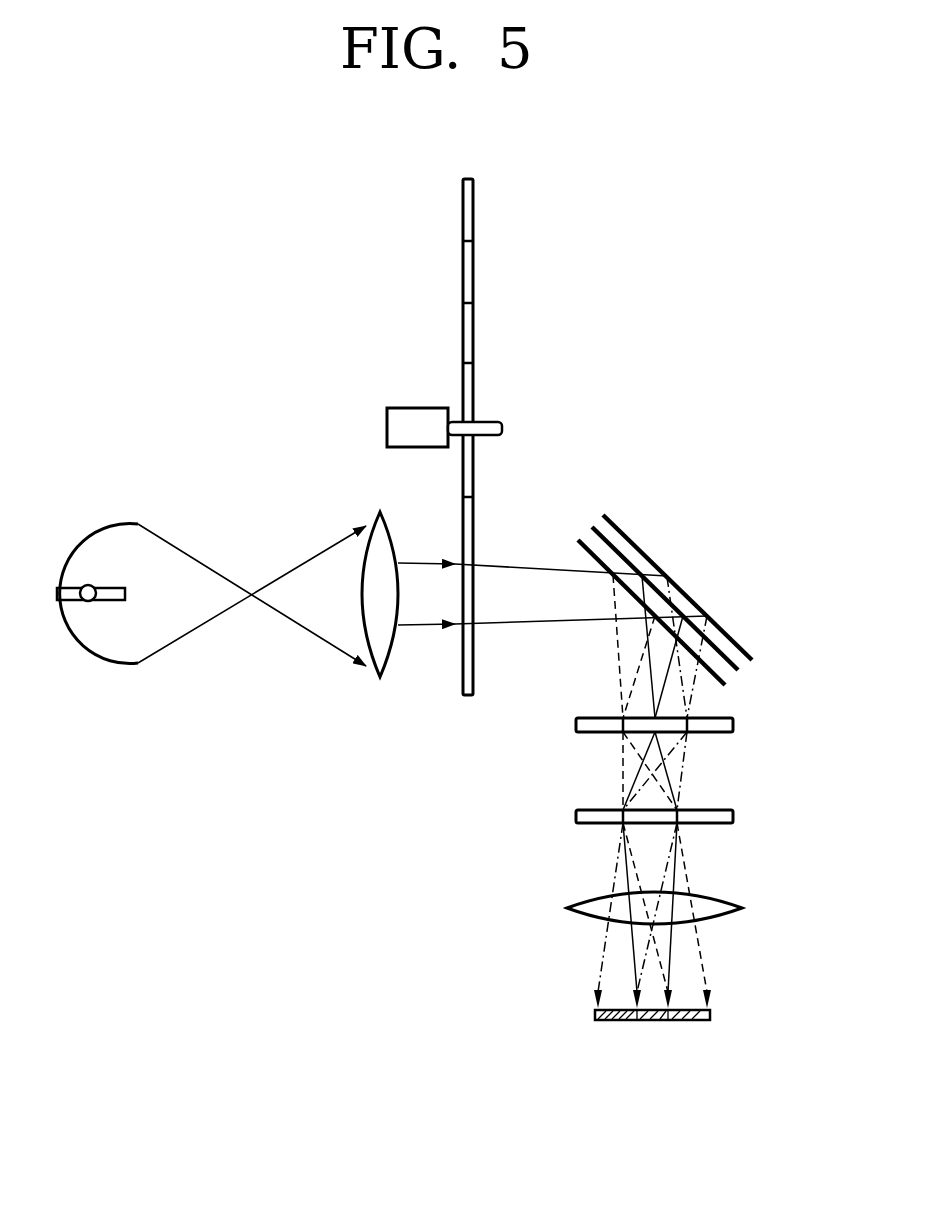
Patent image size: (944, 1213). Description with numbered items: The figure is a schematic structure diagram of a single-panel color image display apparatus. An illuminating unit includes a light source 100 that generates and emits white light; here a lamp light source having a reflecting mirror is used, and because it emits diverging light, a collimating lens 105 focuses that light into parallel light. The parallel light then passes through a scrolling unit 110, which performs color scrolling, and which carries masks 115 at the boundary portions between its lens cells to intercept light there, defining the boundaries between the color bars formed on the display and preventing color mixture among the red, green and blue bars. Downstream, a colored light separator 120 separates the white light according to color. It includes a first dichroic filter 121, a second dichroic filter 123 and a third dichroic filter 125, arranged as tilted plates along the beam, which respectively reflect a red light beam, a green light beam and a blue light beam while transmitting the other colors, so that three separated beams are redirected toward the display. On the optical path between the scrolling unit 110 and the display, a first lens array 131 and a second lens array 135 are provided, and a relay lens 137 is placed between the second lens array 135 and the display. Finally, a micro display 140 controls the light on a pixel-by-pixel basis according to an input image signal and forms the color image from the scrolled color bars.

The light source 100 is at (144, 503).
The collimating lens 105 is at (374, 512).
The scrolling unit 110 is at (474, 227).
The mask 115 is at (419, 407).
The colored light separator 120 is at (657, 564).
The first dichroic filter 121 is at (628, 533).
The second dichroic filter 123 is at (596, 527).
The third dichroic filter 125 is at (580, 541).
The first lens array 131 is at (735, 725).
The second lens array 135 is at (735, 817).
The relay lens 137 is at (743, 908).
The micro display 140 is at (735, 1013).